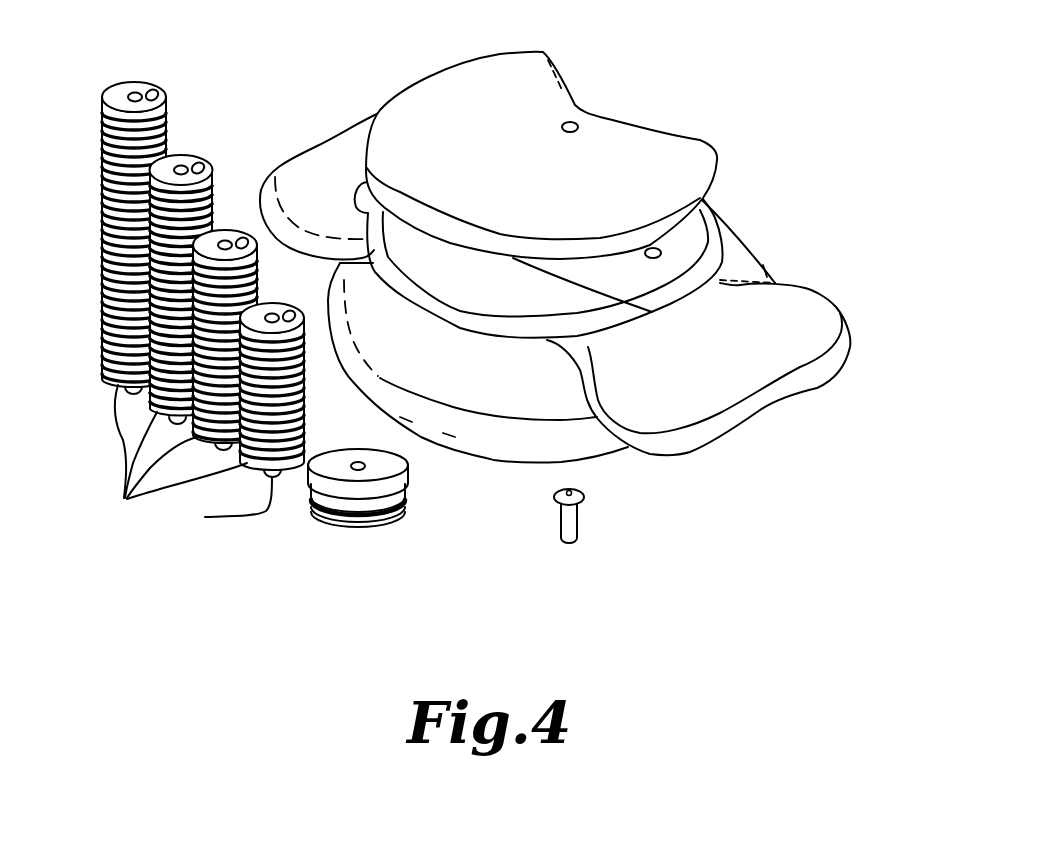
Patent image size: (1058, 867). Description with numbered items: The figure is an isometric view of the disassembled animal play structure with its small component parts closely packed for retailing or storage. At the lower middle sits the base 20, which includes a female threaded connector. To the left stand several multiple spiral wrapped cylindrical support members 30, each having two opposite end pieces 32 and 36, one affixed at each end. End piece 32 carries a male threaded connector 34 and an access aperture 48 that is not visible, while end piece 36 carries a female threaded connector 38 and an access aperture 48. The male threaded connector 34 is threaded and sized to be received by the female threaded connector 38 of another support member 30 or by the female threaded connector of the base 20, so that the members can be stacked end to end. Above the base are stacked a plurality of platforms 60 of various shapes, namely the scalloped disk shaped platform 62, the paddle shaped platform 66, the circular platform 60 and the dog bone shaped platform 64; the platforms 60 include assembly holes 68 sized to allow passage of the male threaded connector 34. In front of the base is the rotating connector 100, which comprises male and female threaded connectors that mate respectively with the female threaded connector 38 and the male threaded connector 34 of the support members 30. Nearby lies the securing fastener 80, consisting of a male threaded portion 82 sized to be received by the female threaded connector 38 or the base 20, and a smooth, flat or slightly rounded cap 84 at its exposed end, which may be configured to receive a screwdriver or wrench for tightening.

The base 20 is at (474, 452).
The multiple spiral wrapped cylindrical support member 30 is at (163, 278).
The end piece 32 is at (144, 217).
The male threaded connector 34 is at (207, 517).
The end piece 36 is at (144, 208).
The female threaded connector 38 is at (135, 90).
The access aperture 48 is at (155, 90).
The platform 60 is at (487, 316).
The scalloped disk shaped platform 62 is at (463, 96).
The dog bone shaped platform 64 is at (850, 336).
The paddle shaped platform 66 is at (715, 272).
The assembly hole 68 is at (572, 122).
The securing fastener 80 is at (606, 517).
The male threaded portion 82 is at (577, 520).
The cap 84 is at (556, 492).
The rotating connector 100 is at (347, 515).